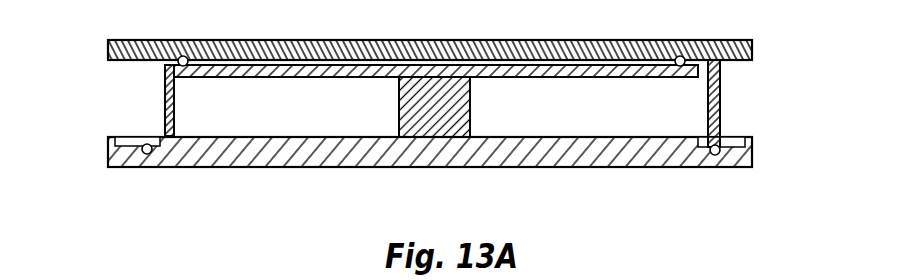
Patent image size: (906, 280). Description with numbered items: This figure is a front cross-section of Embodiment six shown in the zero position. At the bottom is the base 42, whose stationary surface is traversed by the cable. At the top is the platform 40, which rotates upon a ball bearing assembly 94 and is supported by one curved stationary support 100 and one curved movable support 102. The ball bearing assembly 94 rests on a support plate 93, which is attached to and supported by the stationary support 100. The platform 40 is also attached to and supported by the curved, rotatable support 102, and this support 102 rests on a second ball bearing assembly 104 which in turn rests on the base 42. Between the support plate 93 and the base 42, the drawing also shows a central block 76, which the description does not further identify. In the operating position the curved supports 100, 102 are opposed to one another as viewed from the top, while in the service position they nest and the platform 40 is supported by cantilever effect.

The platform 40 is at (752, 48).
The base 42 is at (752, 158).
The support plate 93 is at (227, 67).
The ball bearing assembly 94 is at (167, 62).
The curved stationary support 100 is at (166, 108).
The curved rotatable support 102 is at (720, 110).
The spacer block 76 is at (460, 112).
The ball bearing assembly 104 is at (145, 153).